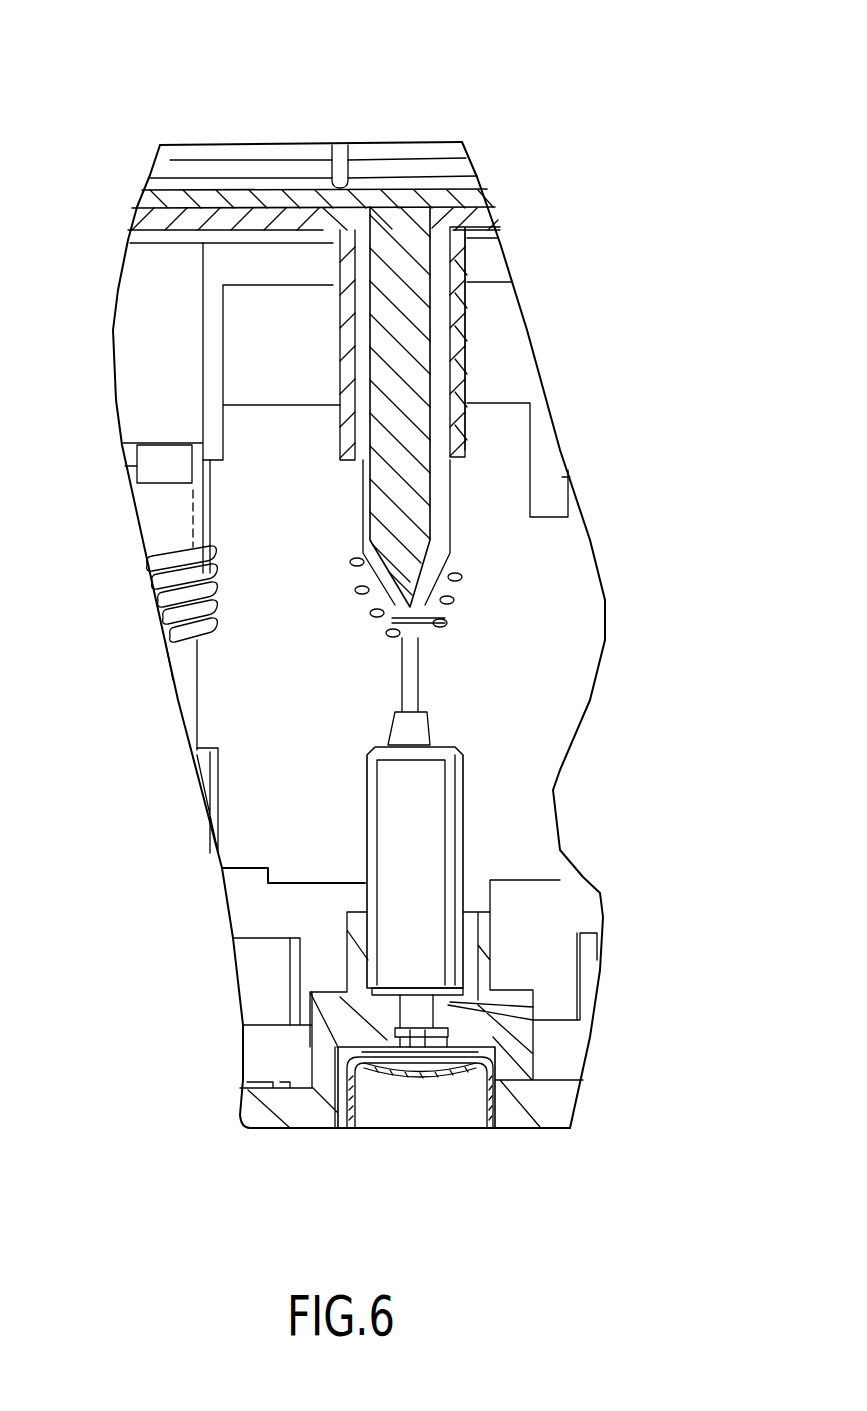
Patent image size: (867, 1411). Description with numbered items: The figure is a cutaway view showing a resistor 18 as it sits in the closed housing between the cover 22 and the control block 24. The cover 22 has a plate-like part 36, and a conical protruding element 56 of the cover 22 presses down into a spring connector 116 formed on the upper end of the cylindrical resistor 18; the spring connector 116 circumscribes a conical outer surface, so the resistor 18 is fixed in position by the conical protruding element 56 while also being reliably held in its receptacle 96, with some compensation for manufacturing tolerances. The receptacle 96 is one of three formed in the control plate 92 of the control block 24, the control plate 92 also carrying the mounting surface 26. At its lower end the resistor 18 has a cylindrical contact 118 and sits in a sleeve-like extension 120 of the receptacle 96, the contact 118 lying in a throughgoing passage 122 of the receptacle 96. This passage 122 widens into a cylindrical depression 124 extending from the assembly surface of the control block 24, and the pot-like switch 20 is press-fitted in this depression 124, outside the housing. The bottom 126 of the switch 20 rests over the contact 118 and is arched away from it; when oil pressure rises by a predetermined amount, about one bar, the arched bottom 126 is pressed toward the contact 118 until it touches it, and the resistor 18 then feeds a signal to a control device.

The resistor 18 is at (427, 833).
The switch 20 is at (347, 1127).
The cover 22 is at (308, 136).
The control block 24 is at (217, 1090).
The mounting surface 26 is at (543, 1130).
The plate-like part 36 is at (388, 175).
The conical protruding element 56 is at (398, 362).
The control plate 92 is at (257, 1130).
The receptacle 96 is at (547, 995).
The spring connector 116 is at (397, 637).
The contact 118 is at (427, 1013).
The sleeve-like extension 120 is at (480, 935).
The throughgoing passage 122 is at (500, 1078).
The cylindrical depression 124 is at (487, 1105).
The bottom 126 is at (402, 1070).